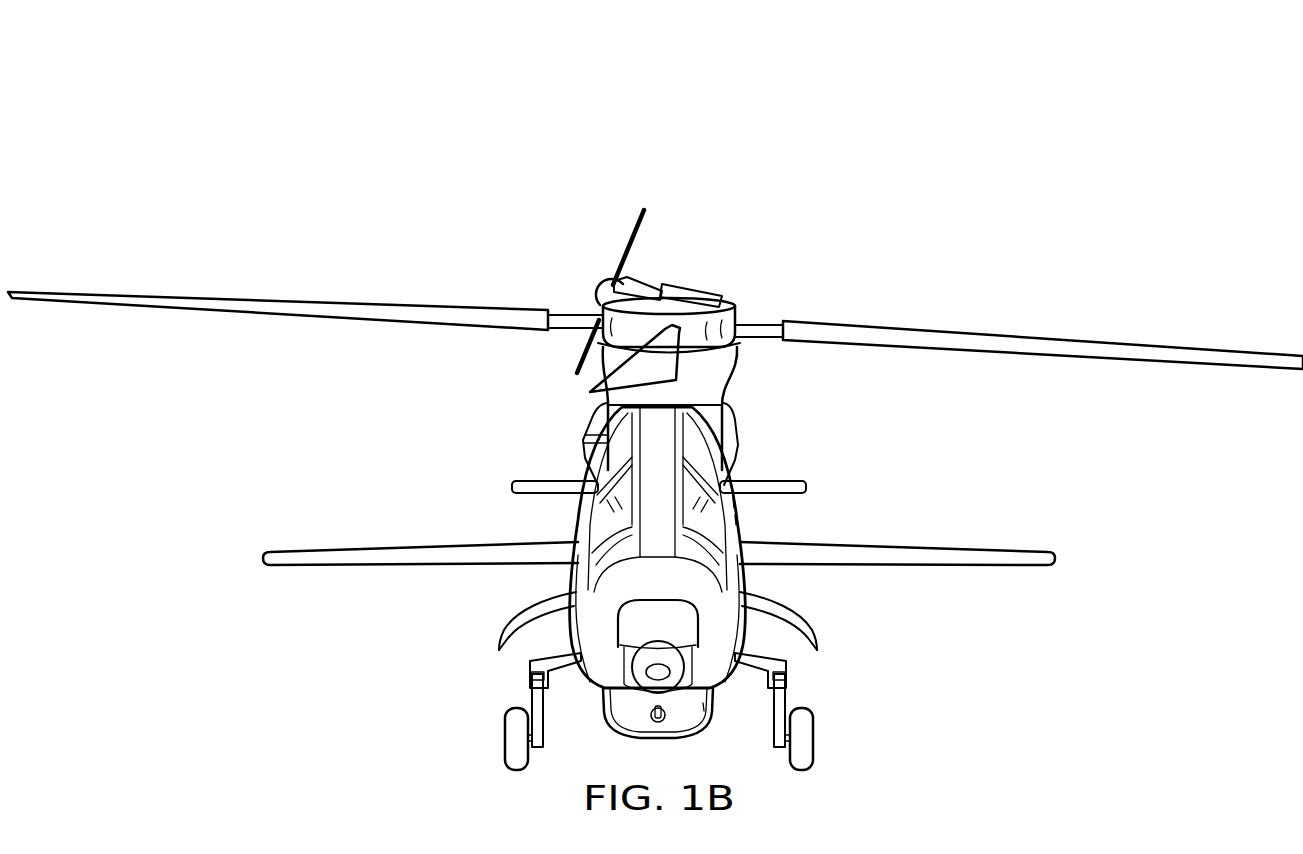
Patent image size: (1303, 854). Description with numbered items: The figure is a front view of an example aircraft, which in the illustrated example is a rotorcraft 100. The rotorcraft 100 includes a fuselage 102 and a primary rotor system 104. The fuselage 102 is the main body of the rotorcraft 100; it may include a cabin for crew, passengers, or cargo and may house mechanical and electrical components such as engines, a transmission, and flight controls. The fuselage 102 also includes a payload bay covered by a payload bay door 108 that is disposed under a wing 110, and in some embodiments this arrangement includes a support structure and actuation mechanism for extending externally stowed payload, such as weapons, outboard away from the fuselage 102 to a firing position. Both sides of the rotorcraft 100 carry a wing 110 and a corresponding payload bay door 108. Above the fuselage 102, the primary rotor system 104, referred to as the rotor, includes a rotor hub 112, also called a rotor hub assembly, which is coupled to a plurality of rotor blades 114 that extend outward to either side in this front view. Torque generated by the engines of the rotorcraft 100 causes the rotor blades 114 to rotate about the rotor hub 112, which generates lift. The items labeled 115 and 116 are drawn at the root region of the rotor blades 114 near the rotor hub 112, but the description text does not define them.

The rotorcraft 100 is at (362, 150).
The fuselage 102 is at (592, 425).
The primary rotor system 104 is at (738, 212).
The payload bay door 108 is at (594, 700).
The wing 110 is at (368, 548).
The rotor hub 112 is at (744, 308).
The rotor blades 114 is at (295, 299).
The blade root shafts 115 is at (573, 313).
The blade grips 116 is at (688, 305).